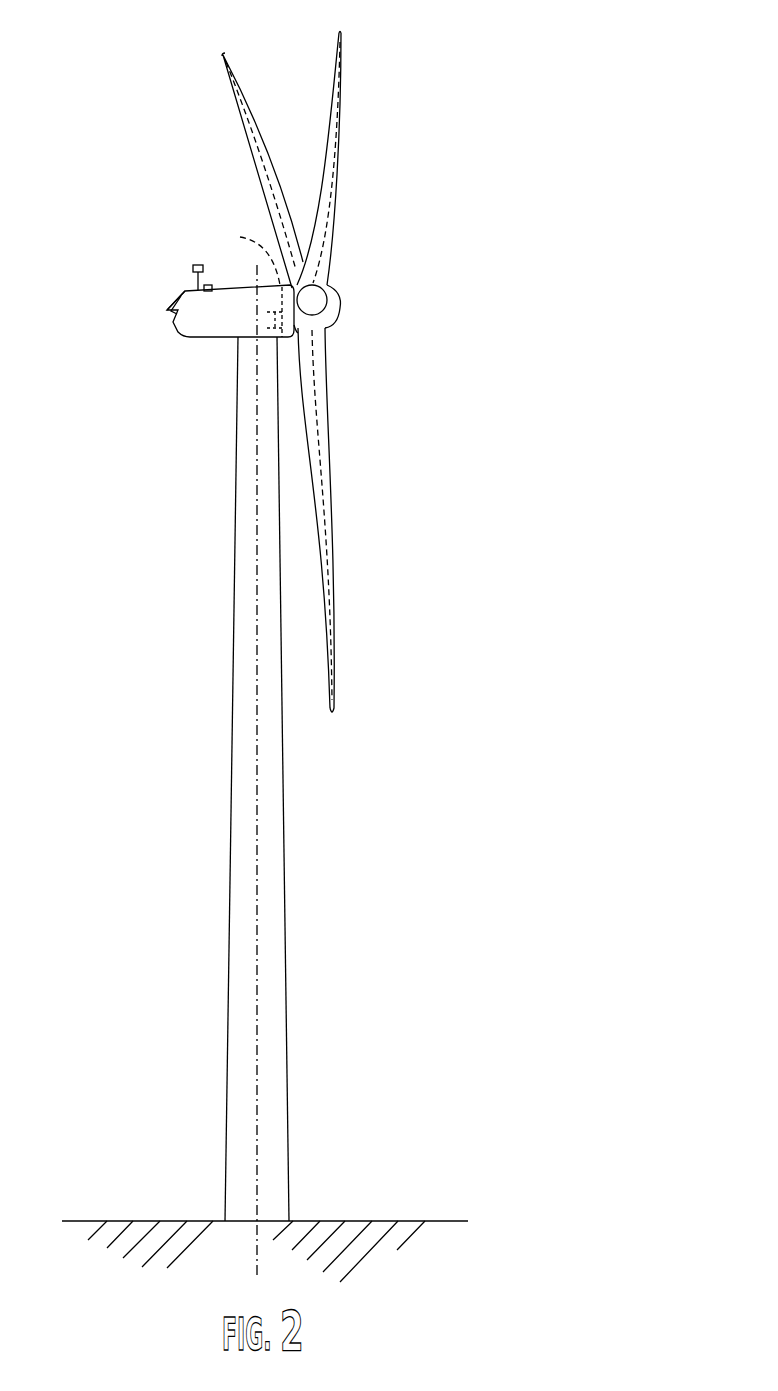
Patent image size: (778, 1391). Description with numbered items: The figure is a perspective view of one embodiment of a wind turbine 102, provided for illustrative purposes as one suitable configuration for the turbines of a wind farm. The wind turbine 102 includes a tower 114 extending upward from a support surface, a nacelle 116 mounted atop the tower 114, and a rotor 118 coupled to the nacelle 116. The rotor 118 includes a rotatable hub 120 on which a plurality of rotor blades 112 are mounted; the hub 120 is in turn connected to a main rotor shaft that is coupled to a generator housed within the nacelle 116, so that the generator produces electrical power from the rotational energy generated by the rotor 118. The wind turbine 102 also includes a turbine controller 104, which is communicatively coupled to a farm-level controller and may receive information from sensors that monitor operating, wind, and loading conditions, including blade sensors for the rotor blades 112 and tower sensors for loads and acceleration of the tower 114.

The wind turbine 102 is at (458, 85).
The turbine controller 104 is at (240, 252).
The rotor blade 112 is at (332, 77).
The tower 114 is at (230, 900).
The nacelle 116 is at (212, 340).
The rotor 118 is at (368, 294).
The rotatable hub 120 is at (337, 307).